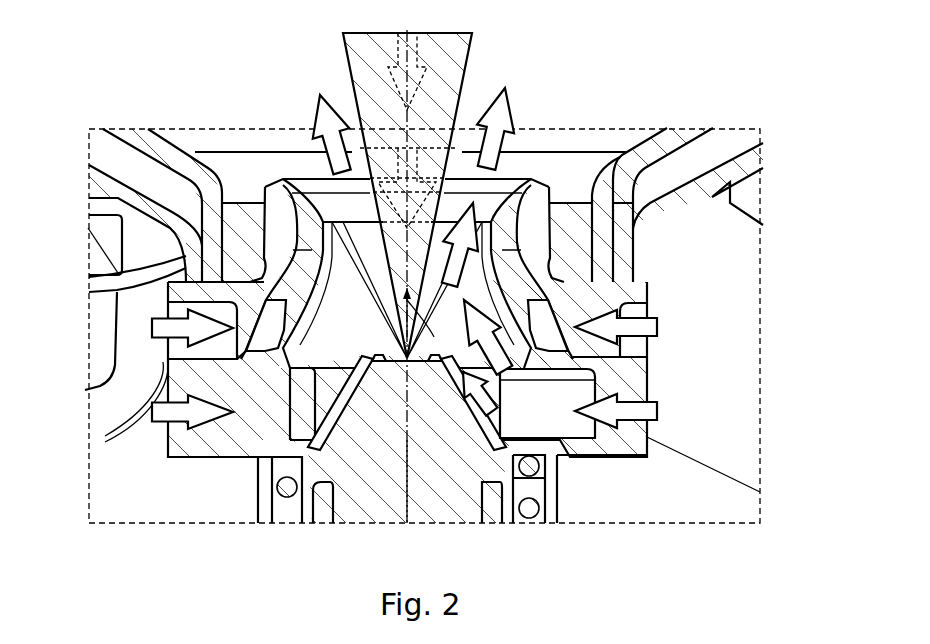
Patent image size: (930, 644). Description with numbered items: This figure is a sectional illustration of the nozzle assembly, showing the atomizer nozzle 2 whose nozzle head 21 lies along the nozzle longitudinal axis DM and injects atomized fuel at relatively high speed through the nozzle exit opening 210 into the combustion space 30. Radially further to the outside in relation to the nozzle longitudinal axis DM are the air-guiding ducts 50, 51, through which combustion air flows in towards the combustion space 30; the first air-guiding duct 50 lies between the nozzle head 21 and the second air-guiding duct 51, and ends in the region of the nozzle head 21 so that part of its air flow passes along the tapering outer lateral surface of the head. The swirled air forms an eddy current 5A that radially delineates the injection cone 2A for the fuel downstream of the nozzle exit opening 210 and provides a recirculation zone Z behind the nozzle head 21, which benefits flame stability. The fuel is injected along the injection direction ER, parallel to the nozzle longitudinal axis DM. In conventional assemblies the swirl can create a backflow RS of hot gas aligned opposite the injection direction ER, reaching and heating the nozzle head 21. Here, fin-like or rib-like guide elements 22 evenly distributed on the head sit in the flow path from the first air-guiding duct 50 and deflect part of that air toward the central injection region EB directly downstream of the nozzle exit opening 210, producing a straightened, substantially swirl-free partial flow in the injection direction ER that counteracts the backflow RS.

The combustion space 30 is at (647, 78).
The recirculation zone Z is at (333, 235).
The backflow RS is at (393, 50).
The eddy current 5A is at (480, 206).
The injection cone 2A is at (362, 308).
The injection direction ER is at (437, 326).
The nozzle 2 is at (349, 481).
The nozzle head 21 is at (331, 449).
The guide elements 22 is at (333, 412).
The nozzle exit opening 210 is at (430, 362).
The nozzle longitudinal axis DM is at (407, 503).
The central injection region EB is at (470, 362).
The first air-guiding duct 50 is at (556, 434).
The second air-guiding duct 51 is at (577, 338).